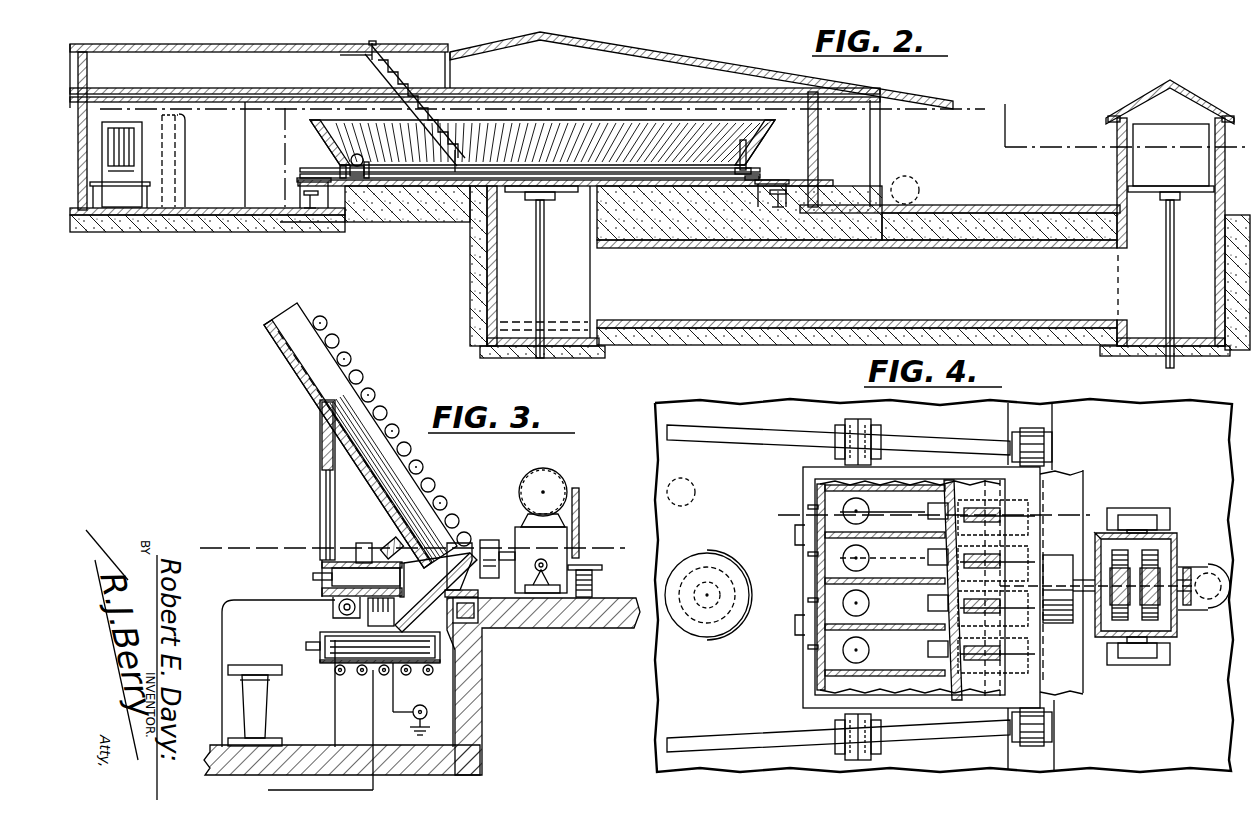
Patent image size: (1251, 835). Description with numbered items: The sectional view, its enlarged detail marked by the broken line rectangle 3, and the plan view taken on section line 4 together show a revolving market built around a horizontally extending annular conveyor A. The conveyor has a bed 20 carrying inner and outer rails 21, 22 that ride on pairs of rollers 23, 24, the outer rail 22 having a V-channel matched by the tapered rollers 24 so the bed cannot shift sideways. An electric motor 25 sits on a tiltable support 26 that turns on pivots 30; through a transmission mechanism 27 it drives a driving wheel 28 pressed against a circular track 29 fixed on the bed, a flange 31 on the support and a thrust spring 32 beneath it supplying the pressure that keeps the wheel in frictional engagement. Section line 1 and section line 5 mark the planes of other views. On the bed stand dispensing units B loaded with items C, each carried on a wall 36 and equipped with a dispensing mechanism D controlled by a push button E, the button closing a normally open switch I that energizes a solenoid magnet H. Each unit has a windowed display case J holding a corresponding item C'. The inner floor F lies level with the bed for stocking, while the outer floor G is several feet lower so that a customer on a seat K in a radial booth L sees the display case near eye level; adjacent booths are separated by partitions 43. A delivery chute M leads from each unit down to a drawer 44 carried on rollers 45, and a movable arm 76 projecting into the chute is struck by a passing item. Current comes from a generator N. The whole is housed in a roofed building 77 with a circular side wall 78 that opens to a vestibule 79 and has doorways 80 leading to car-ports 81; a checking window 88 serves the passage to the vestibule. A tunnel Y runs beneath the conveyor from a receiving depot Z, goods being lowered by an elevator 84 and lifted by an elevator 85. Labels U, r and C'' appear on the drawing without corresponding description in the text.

In FIG. 2, the roofed building 77 is at (706, 56).
In FIG. 2, the checking window 88 is at (124, 147).
In FIG. 2, the vestibule 79 is at (224, 198).
In FIG. 2, the elevator 85 is at (556, 200).
In FIG. 3, the movable arm 76 is at (398, 616).
In FIG. 2, the circular side wall 78 is at (831, 149).
In FIG. 2, the doorways 80 is at (820, 173).
In FIG. 2, the car-ports 81 is at (905, 190).
In FIG. 2, the elevator 84 is at (1167, 185).
In FIG. 2, the electric motor 25 is at (352, 158).
In FIG. 3, the electric motor 25 is at (543, 480).
In FIG. 3, the wall 36 is at (275, 348).
In FIG. 4, the wall 36 is at (920, 520).
In FIG. 3, the driving wheel 28 is at (489, 540).
In FIG. 4, the driving wheel 28 is at (1052, 555).
In FIG. 3, the tiltable support 26 is at (568, 535).
In FIG. 4, the tiltable support 26 is at (1172, 535).
In FIG. 4, the transmission mechanism 27 is at (1162, 558).
In FIG. 3, the pivots 30 is at (541, 559).
In FIG. 4, the pivots 30 is at (1145, 512).
In FIG. 3, the circular track 29 is at (536, 567).
In FIG. 4, the circular track 29 is at (1072, 485).
In FIG. 3, the flange 31 is at (600, 568).
In FIG. 4, the flange 31 is at (1188, 612).
In FIG. 3, the thrust spring 32 is at (593, 585).
In FIG. 4, the thrust spring 32 is at (1204, 599).
In FIG. 3, the conveyor bed 20 is at (320, 590).
In FIG. 4, the conveyor bed 20 is at (1040, 690).
In FIG. 3, the inner rail 21 is at (480, 610).
In FIG. 3, the outer rail 22 is at (336, 606).
In FIG. 3, the rollers 23 is at (470, 626).
In FIG. 4, the rollers 23 is at (1046, 430).
In FIG. 3, the tapered rollers 24 is at (333, 616).
In FIG. 4, the tapered rollers 24 is at (872, 426).
In FIG. 3, the partitions 43 is at (236, 600).
In FIG. 4, the partitions 43 is at (718, 436).
In FIG. 3, the drawer 44 is at (320, 651).
In FIG. 4, the drawer 44 is at (812, 478).
In FIG. 3, the rollers 45 is at (360, 676).
In FIG. 2, the section line 1 is at (990, 128).
In FIG. 2, the broken line rectangle 3 is at (372, 220).
In FIG. 3, the section line 4 is at (408, 551).
In FIG. 4, the section line 5 is at (778, 495).
In FIG. 2, the annular conveyor A is at (530, 112).
In FIG. 3, the annular conveyor A is at (298, 535).
In FIG. 4, the annular conveyor A is at (795, 666).
In FIG. 2, the article dispensing units B is at (568, 116).
In FIG. 3, the article dispensing units B is at (285, 312).
In FIG. 4, the article dispensing units B is at (1006, 496).
In FIG. 3, the items of merchandise C is at (392, 421).
In FIG. 3, the display item C' is at (356, 541).
In FIG. 4, the display item C' is at (895, 579).
In FIG. 4, the roller C'' is at (895, 579).
In FIG. 3, the dispensing mechanism D is at (436, 592).
In FIG. 3, the push button E is at (316, 572).
In FIG. 4, the push button E is at (808, 560).
In FIG. 2, the inner floor F is at (470, 205).
In FIG. 3, the inner floor F is at (596, 625).
In FIG. 4, the inner floor F is at (1124, 410).
In FIG. 2, the outer floor G is at (210, 207).
In FIG. 3, the outer floor G is at (306, 746).
In FIG. 4, the outer floor G is at (800, 410).
In FIG. 3, the solenoid magnet H is at (385, 542).
In FIG. 3, the normally open switch I is at (366, 577).
In FIG. 2, the windowed display case J is at (340, 168).
In FIG. 3, the windowed display case J is at (340, 498).
In FIG. 4, the windowed display case J is at (830, 575).
In FIG. 2, the seat K is at (302, 194).
In FIG. 3, the seat K is at (256, 664).
In FIG. 4, the seat K is at (702, 552).
In FIG. 2, the booths L is at (297, 180).
In FIG. 3, the booths L is at (232, 608).
In FIG. 4, the booths L is at (681, 492).
In FIG. 2, the delivery chute M is at (790, 192).
In FIG. 3, the delivery chute M is at (452, 538).
In FIG. 3, the generator N is at (424, 706).
In FIG. 2, the cabinet U is at (160, 134).
In FIG. 2, the tunnel Y is at (965, 265).
In FIG. 2, the receiving depot Z is at (1104, 124).
In FIG. 2, the column r is at (186, 153).
In FIG. 3, the column r is at (262, 790).